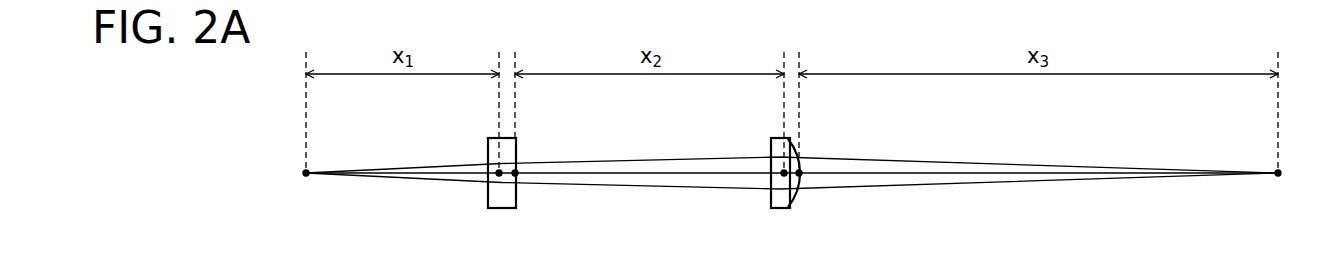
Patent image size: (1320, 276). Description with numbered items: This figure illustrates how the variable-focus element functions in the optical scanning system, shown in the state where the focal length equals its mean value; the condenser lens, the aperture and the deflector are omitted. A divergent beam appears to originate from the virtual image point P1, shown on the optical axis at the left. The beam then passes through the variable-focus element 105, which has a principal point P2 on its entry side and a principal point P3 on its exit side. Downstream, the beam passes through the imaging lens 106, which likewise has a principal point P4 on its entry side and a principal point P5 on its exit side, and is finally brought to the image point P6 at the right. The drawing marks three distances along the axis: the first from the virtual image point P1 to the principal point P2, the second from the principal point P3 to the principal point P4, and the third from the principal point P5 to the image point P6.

The variable-focus element 105 is at (516, 152).
The imaging lens 106 is at (795, 137).
The virtual image point of the divergent beam P1 is at (306, 178).
The principal point on the entry side of the variable-focus element P2 is at (499, 178).
The principal point on the exit side of the variable-focus element P3 is at (516, 178).
The principal point on the entry side of the imaging lens P4 is at (784, 178).
The principal point on the exit side of the imaging lens P5 is at (800, 178).
The image point of the beam P6 is at (1278, 178).